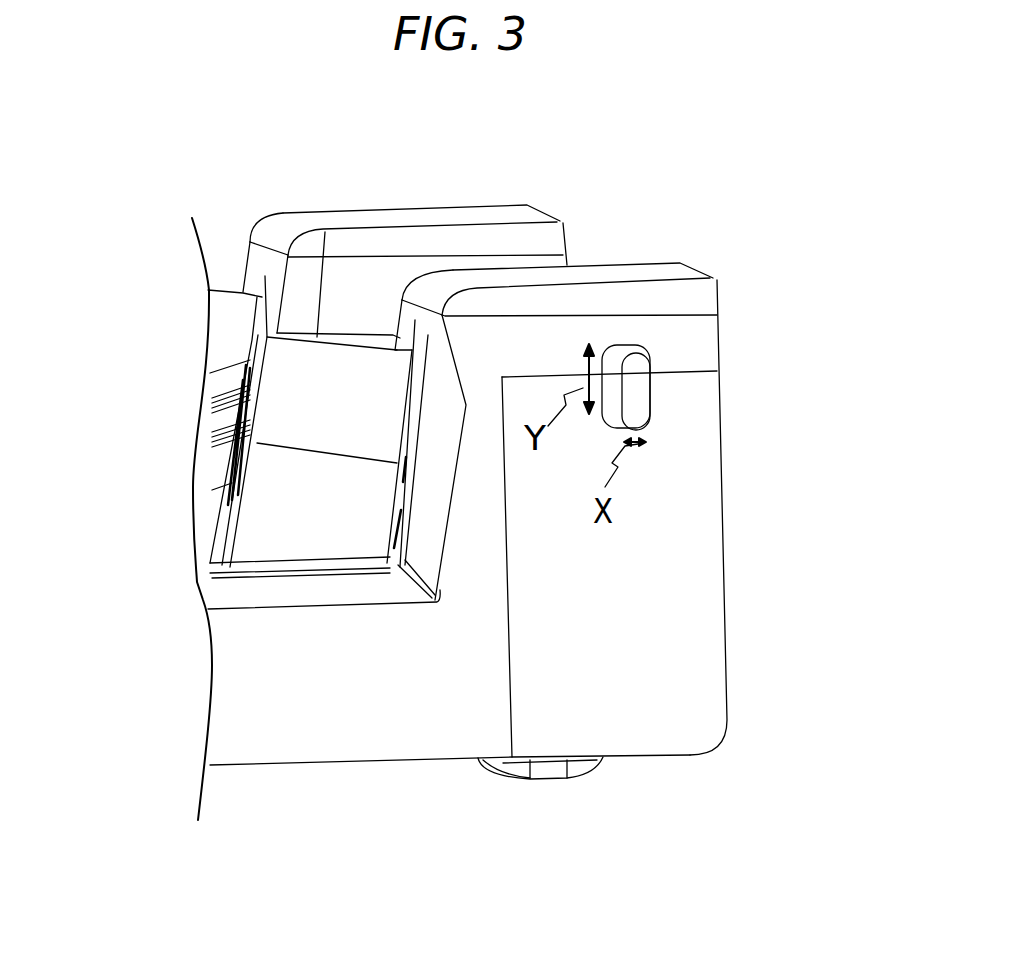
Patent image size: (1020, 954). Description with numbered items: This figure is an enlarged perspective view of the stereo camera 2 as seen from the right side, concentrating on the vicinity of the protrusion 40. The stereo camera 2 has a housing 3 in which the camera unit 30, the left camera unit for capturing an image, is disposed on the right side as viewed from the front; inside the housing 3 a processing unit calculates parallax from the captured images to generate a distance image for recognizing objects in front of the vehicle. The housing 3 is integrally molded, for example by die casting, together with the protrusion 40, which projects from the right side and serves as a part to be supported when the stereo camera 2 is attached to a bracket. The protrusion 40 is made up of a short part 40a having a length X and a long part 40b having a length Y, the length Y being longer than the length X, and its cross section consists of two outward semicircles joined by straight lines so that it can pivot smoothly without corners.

The stereo camera 2 is at (795, 202).
The housing 3 is at (707, 585).
The camera unit 30 is at (240, 417).
The protrusion 40 is at (739, 282).
The short part 40a is at (640, 367).
The long part 40b is at (650, 392).